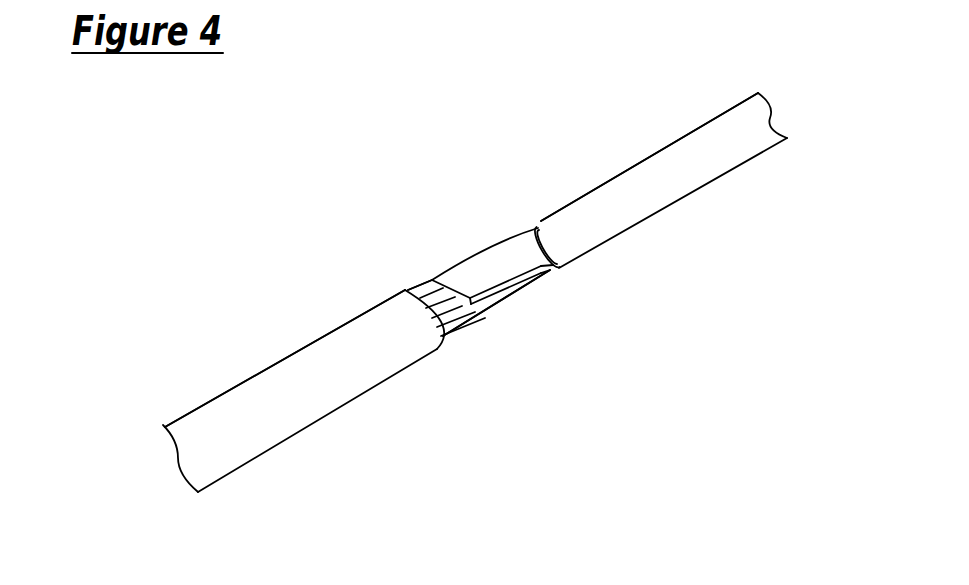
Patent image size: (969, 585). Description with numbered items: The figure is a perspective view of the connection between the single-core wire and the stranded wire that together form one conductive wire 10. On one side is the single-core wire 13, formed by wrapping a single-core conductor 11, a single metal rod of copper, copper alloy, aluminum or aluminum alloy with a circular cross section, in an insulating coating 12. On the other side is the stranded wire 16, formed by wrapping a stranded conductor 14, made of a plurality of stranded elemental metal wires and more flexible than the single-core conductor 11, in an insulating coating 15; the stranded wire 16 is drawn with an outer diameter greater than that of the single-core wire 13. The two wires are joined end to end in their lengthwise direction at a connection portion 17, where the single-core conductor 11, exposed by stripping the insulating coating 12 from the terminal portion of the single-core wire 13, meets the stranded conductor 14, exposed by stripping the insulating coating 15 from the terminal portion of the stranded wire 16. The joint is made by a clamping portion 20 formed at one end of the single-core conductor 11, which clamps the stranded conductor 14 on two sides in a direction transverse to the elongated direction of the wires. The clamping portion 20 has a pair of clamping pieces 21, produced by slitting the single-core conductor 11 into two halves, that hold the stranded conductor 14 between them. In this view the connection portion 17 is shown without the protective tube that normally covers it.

The conductive wire 10 is at (430, 93).
The single-core conductor 11 is at (513, 242).
The insulating coating 12 is at (621, 186).
The single-core wire 13 is at (690, 140).
The stranded conductor 14 is at (501, 306).
The insulating coating 15 is at (383, 362).
The stranded wire 16 is at (275, 415).
The connection portion 17 is at (450, 272).
The clamping portion 20 is at (487, 251).
The clamping piece 21 is at (445, 271).